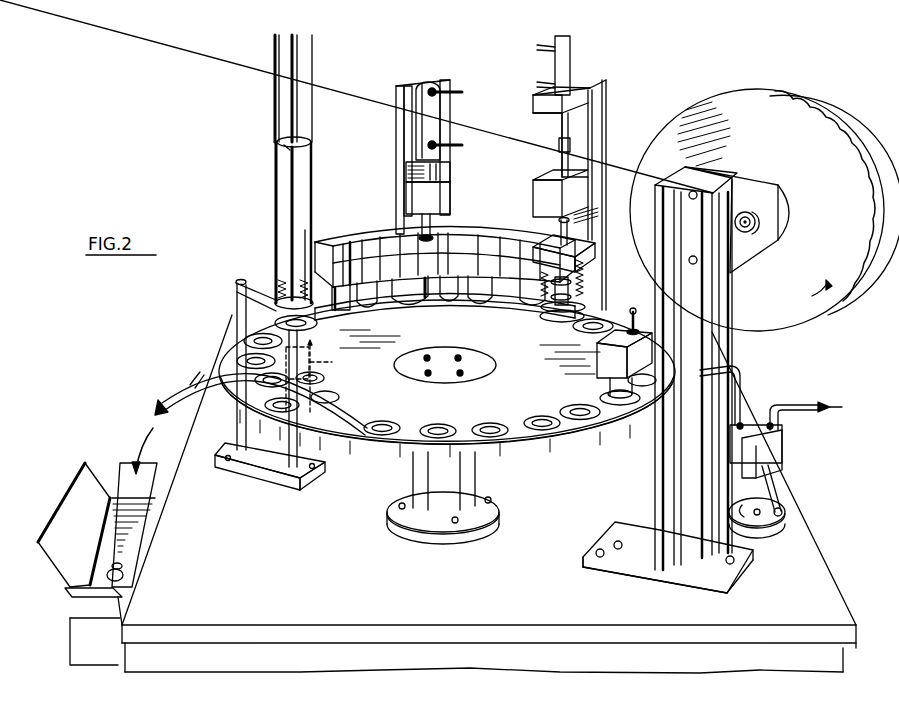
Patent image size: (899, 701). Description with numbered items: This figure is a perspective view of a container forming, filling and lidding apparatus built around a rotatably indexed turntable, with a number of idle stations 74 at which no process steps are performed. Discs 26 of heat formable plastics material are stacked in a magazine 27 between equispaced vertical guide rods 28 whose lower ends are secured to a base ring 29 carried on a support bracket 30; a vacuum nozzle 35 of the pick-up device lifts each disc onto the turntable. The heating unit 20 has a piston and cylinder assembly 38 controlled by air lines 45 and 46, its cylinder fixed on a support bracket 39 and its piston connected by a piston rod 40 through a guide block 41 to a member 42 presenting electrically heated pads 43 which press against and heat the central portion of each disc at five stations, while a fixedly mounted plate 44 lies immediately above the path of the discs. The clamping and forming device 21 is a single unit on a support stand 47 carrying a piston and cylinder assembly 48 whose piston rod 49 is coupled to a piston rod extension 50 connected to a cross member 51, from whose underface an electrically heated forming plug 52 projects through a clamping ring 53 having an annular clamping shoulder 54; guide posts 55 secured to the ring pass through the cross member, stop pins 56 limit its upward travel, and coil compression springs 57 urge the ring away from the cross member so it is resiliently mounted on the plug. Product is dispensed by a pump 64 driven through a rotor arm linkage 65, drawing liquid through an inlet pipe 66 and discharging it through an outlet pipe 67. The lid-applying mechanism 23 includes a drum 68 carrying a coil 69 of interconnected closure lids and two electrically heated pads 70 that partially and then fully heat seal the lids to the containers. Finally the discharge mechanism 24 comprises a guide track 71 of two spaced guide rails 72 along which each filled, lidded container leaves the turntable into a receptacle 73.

The heating unit 20 is at (470, 220).
The clamping and forming device 21 is at (530, 110).
The mechanism for applying a closure lid 23 is at (692, 92).
The discharge mechanism 24 is at (318, 412).
The discs 26 is at (284, 145).
The magazine 27 is at (276, 158).
The guide rods 28 is at (290, 76).
The base ring 29 is at (312, 322).
The support bracket 30 is at (236, 296).
The vacuum nozzle 35 is at (319, 377).
The piston and cylinder assembly 38 is at (420, 108).
The support bracket 39 is at (402, 132).
The piston rod 40 is at (412, 186).
The guide block 41 is at (418, 200).
The member 42 is at (380, 243).
The electrically heated pads 43 is at (425, 300).
The plate 44 is at (482, 304).
The air line 45 is at (448, 92).
The air line 46 is at (450, 145).
The support stand 47 is at (606, 92).
The piston and cylinder assembly 48 is at (571, 47).
The piston rod 49 is at (562, 126).
The piston rod extension 50 is at (560, 158).
The cross member 51 is at (534, 185).
The forming device or plug 52 is at (558, 308).
The ring 53 is at (545, 316).
The annular clamping shoulder 54 is at (586, 322).
The guide posts 55 is at (594, 250).
The stop pins 56 is at (548, 244).
The coil compression springs 57 is at (588, 270).
The pump 64 is at (768, 442).
The rotor arm linkage 65 is at (778, 500).
The inlet pipe 66 is at (792, 406).
The outlet pipe 67 is at (746, 372).
The drum 68 is at (748, 186).
The coil 69 is at (842, 158).
The electrically heated pads 70 is at (606, 384).
The guide track 71 is at (190, 388).
The guide rails 72 is at (200, 372).
The receptacle 73 is at (86, 496).
The idle stations 74 is at (250, 342).